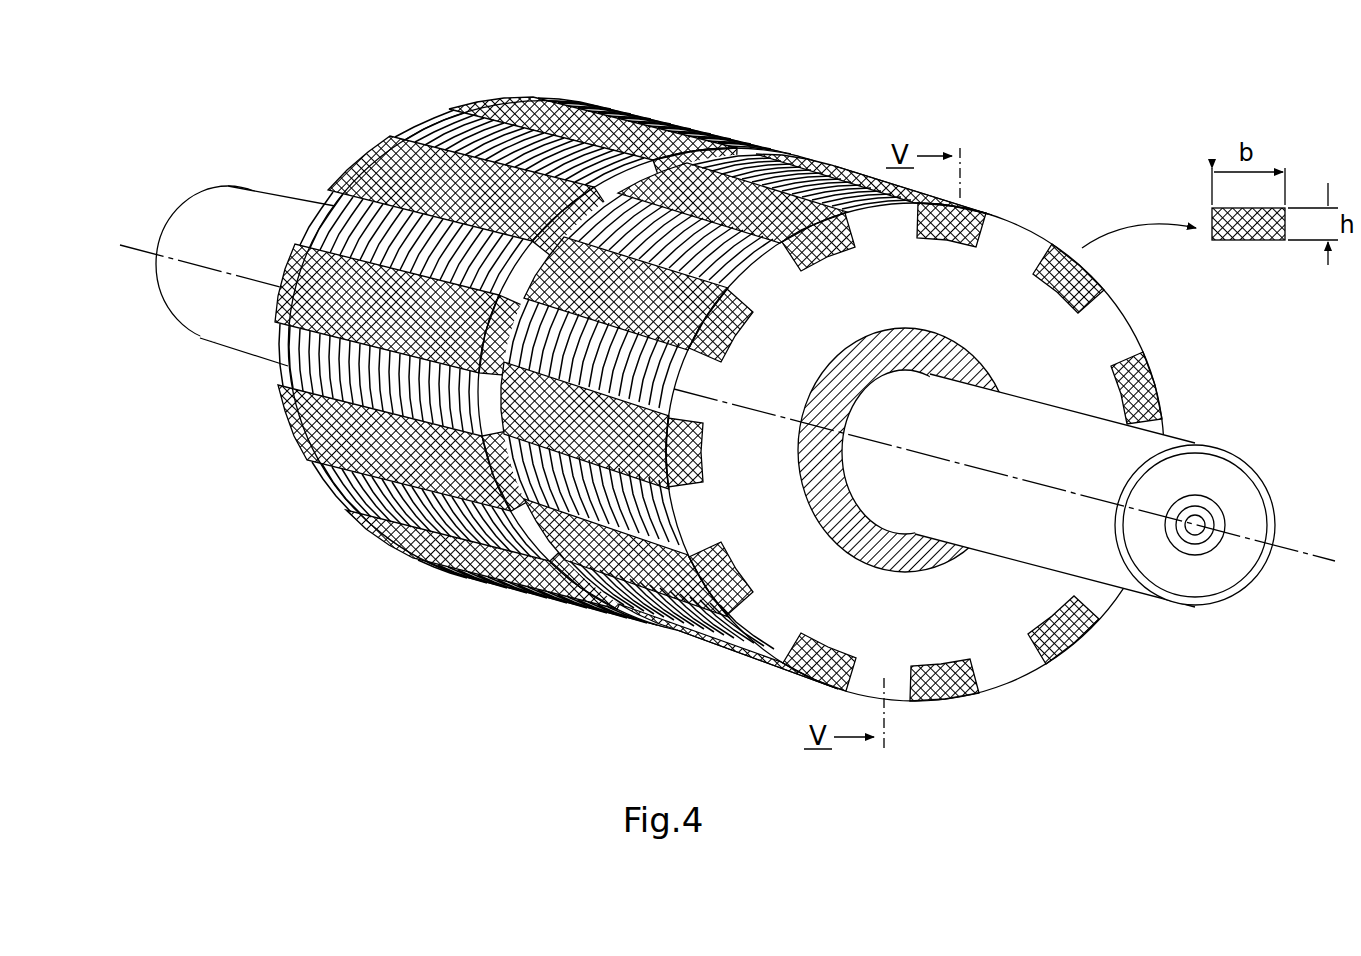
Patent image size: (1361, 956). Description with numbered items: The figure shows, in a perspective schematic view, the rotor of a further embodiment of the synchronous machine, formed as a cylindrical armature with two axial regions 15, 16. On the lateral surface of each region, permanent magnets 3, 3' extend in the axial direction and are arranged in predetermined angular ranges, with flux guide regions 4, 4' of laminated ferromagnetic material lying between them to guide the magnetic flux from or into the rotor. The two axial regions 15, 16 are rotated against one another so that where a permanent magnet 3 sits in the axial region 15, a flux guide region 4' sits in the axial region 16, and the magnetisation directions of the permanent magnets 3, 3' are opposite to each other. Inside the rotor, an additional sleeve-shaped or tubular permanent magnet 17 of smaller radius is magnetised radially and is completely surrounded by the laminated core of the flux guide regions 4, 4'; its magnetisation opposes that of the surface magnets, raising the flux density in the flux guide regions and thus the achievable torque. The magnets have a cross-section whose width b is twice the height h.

The permanent magnet 3 is at (831, 424).
The permanent magnet 3' is at (506, 321).
The flux guide region 4 is at (710, 376).
The flux guide region 4' is at (535, 334).
The axial region 15 is at (748, 704).
The axial region 16 is at (516, 644).
The sleeve-shaped permanent magnet 17 is at (970, 342).